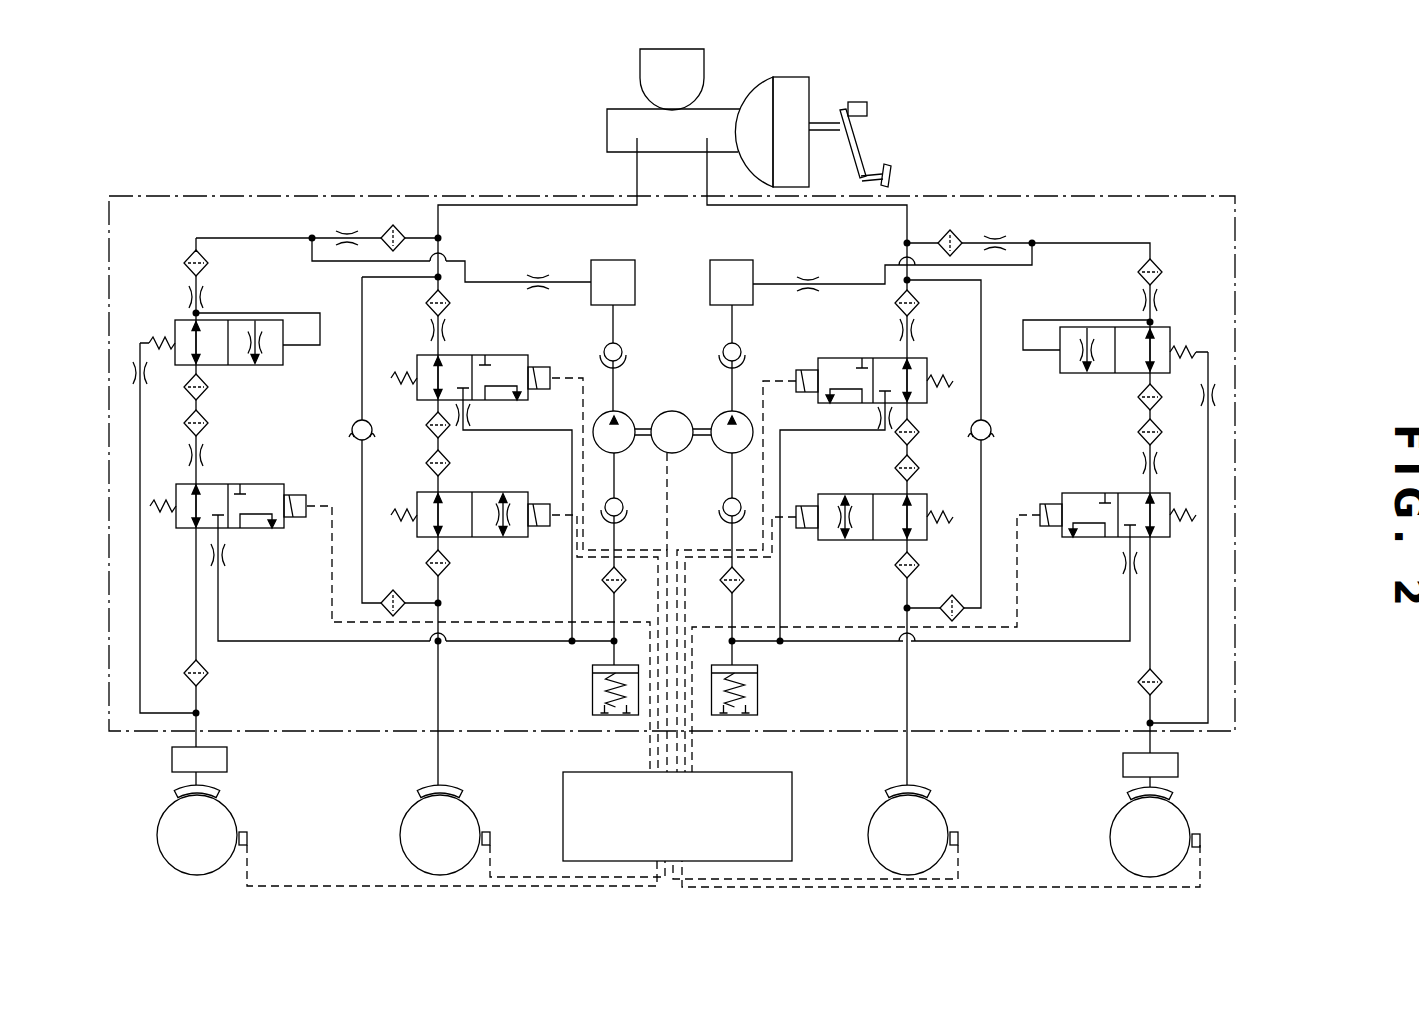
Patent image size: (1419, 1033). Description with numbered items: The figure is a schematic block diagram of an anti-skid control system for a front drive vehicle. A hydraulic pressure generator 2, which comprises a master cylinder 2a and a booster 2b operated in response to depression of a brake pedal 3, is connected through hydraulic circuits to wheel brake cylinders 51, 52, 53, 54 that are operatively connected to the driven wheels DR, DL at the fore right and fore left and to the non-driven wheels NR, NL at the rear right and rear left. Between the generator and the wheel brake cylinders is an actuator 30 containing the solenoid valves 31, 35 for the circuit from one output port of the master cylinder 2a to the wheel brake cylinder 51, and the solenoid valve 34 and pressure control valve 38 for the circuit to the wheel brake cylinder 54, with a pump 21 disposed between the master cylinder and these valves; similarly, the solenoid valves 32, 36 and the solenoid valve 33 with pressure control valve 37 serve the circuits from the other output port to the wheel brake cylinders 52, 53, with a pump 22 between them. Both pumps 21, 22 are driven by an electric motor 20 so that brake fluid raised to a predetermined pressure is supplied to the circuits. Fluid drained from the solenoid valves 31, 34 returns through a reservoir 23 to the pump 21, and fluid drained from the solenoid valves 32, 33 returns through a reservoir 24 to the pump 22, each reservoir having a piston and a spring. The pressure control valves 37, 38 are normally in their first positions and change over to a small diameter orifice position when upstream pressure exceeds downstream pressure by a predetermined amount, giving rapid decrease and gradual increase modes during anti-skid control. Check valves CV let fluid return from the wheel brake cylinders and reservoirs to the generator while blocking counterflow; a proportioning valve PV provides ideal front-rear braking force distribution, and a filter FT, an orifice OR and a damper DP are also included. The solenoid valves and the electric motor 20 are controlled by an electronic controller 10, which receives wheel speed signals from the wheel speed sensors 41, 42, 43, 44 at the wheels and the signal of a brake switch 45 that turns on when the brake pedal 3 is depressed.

The hydraulic pressure generator 2 is at (640, 67).
The master cylinder 2a is at (607, 128).
The booster 2b is at (760, 95).
The brake pedal 3 is at (862, 135).
The brake switch 45 is at (854, 101).
The electronic controller 10 is at (747, 772).
The actuator 30 is at (1237, 268).
The solenoid valve 31 is at (472, 355).
The solenoid valve 32 is at (920, 358).
The solenoid valve 33 is at (1110, 493).
The solenoid valve 34 is at (228, 484).
The solenoid valve 35 is at (470, 492).
The solenoid valve 36 is at (920, 494).
The pressure control valve 37 is at (1160, 327).
The pressure control valve 38 is at (180, 320).
The electric motor 20 is at (676, 411).
The pump 21 is at (618, 412).
The pump 22 is at (738, 412).
The reservoir 23 is at (593, 692).
The reservoir 24 is at (757, 692).
The wheel speed sensor 41 is at (493, 838).
The wheel speed sensor 42 is at (960, 838).
The wheel speed sensor 43 is at (1202, 838).
The wheel speed sensor 44 is at (250, 838).
The wheel brake cylinder 51 is at (465, 791).
The wheel brake cylinder 52 is at (930, 791).
The wheel brake cylinder 53 is at (1172, 793).
The wheel brake cylinder 54 is at (222, 791).
The damper DP is at (752, 262).
The check valve CV is at (358, 422).
The filter FT is at (190, 256).
The orifice OR is at (345, 232).
The proportioning valve PV is at (675, 762).
The non-driven wheel NL is at (158, 833).
The non-driven wheel NR is at (1112, 838).
The driven wheel DL is at (870, 837).
The driven wheel DR is at (402, 836).